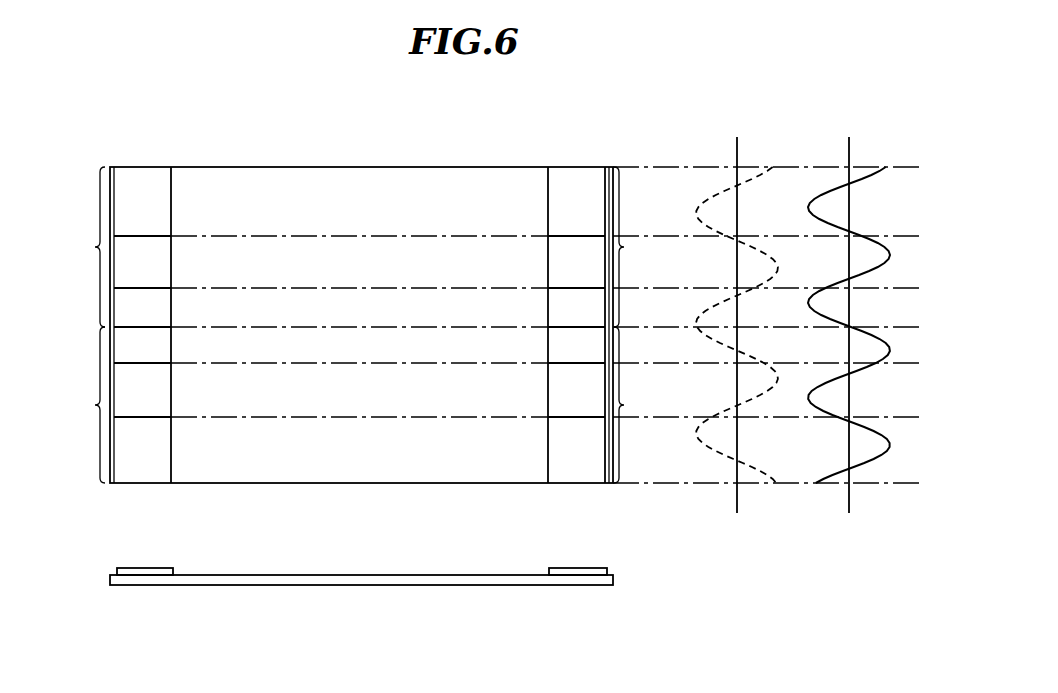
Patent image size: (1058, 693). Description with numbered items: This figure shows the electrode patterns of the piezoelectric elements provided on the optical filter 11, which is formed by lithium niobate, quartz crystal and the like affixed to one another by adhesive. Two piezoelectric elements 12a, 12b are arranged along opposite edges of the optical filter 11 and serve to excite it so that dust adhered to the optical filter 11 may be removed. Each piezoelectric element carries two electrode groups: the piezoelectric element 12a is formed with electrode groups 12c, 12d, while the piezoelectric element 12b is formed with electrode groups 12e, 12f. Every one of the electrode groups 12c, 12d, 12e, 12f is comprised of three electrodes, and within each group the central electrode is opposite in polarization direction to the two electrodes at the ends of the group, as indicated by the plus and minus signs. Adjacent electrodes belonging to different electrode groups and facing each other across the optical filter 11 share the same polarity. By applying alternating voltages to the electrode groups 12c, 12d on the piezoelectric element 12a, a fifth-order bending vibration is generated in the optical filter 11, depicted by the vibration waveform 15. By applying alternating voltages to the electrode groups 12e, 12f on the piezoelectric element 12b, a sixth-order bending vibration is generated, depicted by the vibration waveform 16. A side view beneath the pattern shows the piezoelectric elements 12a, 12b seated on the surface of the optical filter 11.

The optical filter 11 is at (373, 167).
The piezoelectric element 12a is at (138, 485).
The piezoelectric element 12b is at (570, 485).
The electrode group 12c is at (77, 247).
The electrode group 12d is at (77, 405).
The electrode group 12e is at (641, 247).
The electrode group 12f is at (640, 405).
The vibration waveform 15 is at (717, 195).
The vibration waveform 16 is at (840, 185).